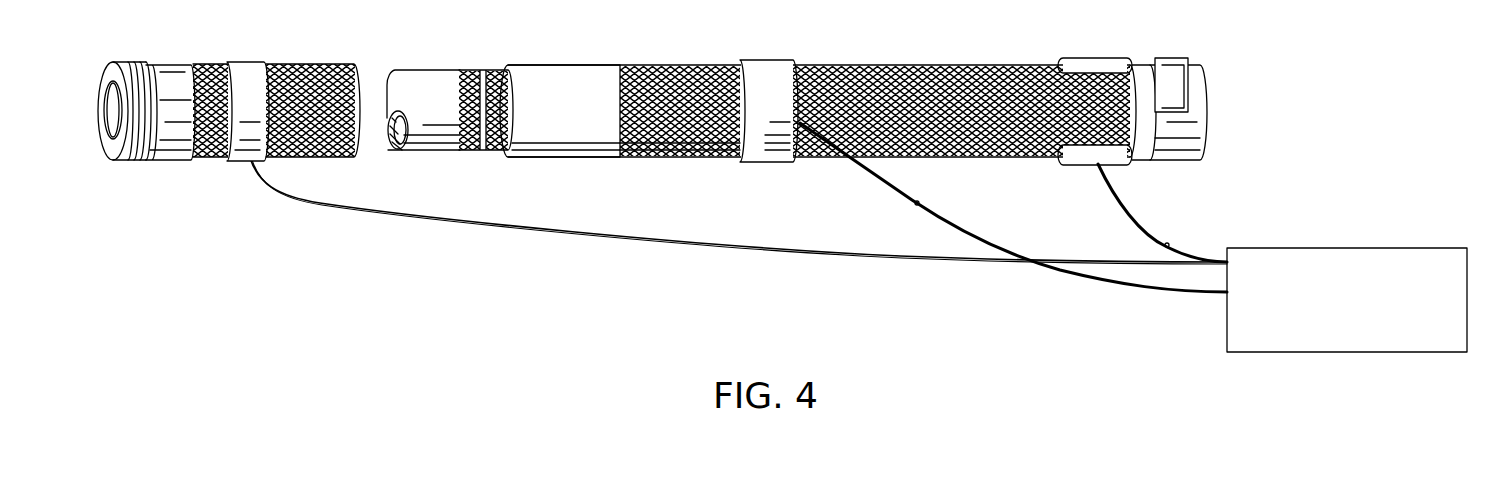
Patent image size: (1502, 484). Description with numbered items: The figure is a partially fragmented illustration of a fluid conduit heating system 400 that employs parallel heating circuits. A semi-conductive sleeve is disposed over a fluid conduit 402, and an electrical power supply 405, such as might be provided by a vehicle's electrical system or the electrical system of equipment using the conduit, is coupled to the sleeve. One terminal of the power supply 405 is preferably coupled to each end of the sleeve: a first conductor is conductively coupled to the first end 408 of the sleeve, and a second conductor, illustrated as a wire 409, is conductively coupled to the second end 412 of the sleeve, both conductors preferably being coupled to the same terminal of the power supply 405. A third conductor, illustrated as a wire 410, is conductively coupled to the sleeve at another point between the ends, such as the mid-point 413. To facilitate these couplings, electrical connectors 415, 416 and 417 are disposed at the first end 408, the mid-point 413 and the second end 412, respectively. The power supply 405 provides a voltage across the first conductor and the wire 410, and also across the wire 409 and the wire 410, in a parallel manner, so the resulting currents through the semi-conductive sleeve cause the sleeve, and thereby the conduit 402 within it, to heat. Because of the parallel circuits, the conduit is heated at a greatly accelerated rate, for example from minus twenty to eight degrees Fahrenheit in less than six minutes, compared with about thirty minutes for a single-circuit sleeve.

The fluid conduit heating system 400 is at (733, 285).
The fluid conduit 402 is at (597, 164).
The electrical power supply 405 is at (1356, 247).
The first end 408 is at (281, 61).
The wire 409 is at (1166, 249).
The wire 410 is at (915, 206).
The second end 412 is at (1058, 57).
The mid-point 413 is at (768, 58).
The electrical connector 415 is at (229, 161).
The ring band 416 is at (782, 78).
The electrical connector 417 is at (1101, 166).